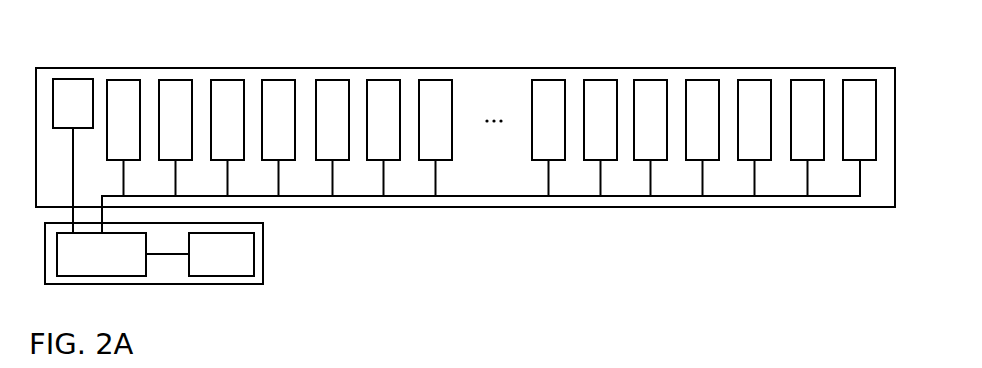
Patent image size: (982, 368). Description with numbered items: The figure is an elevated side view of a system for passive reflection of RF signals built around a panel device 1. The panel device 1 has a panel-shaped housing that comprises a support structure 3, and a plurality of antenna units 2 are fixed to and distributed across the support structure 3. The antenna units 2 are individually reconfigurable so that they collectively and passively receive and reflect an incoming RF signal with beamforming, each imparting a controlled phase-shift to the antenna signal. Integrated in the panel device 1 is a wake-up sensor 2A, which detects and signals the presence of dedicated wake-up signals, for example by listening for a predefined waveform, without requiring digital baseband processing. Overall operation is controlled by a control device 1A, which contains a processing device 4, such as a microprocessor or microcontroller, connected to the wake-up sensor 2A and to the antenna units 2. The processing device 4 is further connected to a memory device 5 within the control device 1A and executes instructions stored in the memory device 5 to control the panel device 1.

The panel device 1 is at (492, 155).
The control device 1A is at (188, 253).
The antenna units 2 is at (117, 114).
The wake-up sensor 2A is at (60, 114).
The support structure 3 is at (895, 144).
The processing device 4 is at (108, 266).
The memory device 5 is at (228, 266).